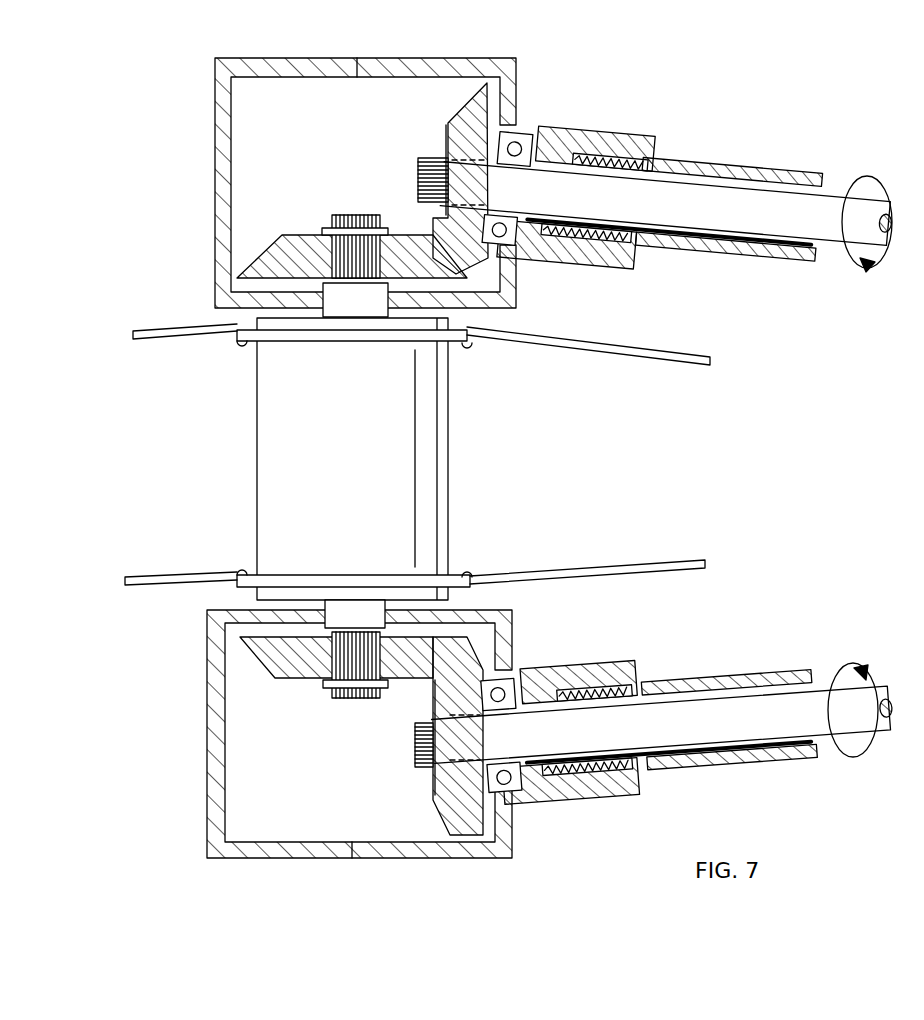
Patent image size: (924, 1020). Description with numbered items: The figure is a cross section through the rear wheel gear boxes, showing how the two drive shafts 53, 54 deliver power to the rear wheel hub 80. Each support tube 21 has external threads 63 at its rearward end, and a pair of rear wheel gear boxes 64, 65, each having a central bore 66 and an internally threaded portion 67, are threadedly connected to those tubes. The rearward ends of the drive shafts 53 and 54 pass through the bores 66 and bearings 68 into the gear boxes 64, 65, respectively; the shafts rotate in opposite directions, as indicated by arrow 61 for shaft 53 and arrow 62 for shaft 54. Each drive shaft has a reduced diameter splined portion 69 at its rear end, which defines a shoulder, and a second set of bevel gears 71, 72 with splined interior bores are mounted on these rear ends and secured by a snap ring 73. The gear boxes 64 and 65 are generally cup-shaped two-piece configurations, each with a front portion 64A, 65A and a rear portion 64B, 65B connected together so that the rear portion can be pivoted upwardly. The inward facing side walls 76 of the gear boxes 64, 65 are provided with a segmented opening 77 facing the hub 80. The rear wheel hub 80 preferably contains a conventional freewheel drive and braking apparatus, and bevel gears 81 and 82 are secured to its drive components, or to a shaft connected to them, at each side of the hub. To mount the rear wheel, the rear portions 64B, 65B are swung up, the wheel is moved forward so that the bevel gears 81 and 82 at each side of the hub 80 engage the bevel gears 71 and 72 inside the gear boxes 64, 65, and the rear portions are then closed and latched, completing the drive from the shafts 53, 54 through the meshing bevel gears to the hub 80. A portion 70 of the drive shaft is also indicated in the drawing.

The support tube 21 is at (728, 209).
The drive shaft 53 is at (729, 720).
The drive shaft 54 is at (561, 726).
The arrow 61 is at (855, 762).
The arrow 62 is at (856, 272).
The external threads 63 is at (570, 781).
The rear wheel gear box 64 is at (207, 712).
The front portion 64A is at (430, 860).
The rear portion 64B is at (258, 860).
The rear wheel gear box 65 is at (215, 140).
The front portion 65A is at (398, 57).
The rear portion 65B is at (322, 57).
The central bore 66 is at (667, 207).
The internally threaded portion 67 is at (567, 244).
The bearing 68 is at (568, 189).
The splined portion 69 is at (420, 170).
The shaft section 70 is at (663, 728).
The bevel gear 71 is at (460, 820).
The bevel gear 72 is at (463, 95).
The snap ring 73 is at (447, 158).
The inward facing side wall 76 is at (297, 343).
The segmented opening 77 is at (388, 320).
The rear wheel hub 80 is at (352, 476).
The bevel gear 81 is at (266, 680).
The bevel gear 82 is at (272, 246).